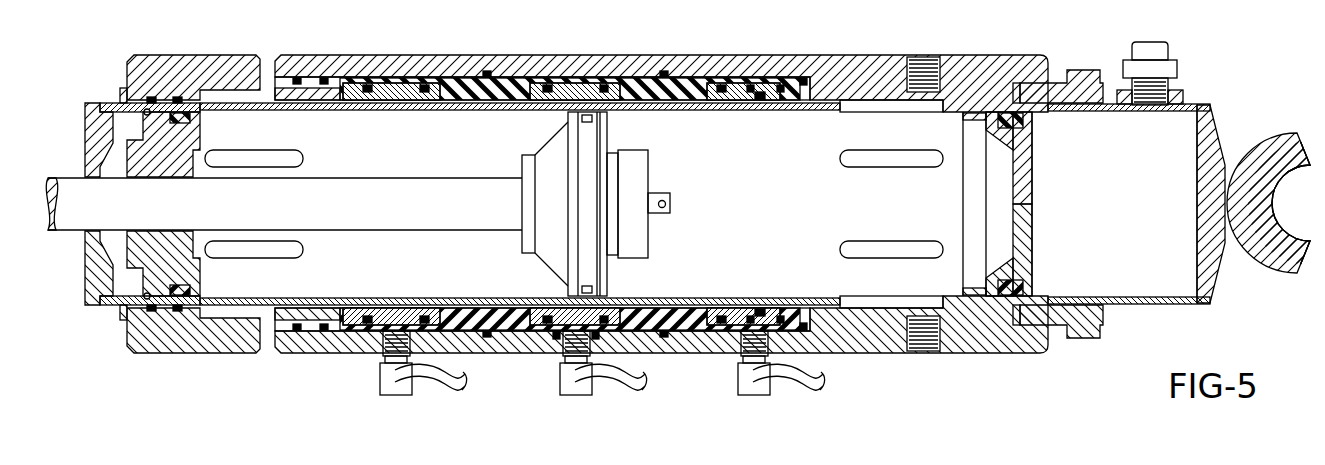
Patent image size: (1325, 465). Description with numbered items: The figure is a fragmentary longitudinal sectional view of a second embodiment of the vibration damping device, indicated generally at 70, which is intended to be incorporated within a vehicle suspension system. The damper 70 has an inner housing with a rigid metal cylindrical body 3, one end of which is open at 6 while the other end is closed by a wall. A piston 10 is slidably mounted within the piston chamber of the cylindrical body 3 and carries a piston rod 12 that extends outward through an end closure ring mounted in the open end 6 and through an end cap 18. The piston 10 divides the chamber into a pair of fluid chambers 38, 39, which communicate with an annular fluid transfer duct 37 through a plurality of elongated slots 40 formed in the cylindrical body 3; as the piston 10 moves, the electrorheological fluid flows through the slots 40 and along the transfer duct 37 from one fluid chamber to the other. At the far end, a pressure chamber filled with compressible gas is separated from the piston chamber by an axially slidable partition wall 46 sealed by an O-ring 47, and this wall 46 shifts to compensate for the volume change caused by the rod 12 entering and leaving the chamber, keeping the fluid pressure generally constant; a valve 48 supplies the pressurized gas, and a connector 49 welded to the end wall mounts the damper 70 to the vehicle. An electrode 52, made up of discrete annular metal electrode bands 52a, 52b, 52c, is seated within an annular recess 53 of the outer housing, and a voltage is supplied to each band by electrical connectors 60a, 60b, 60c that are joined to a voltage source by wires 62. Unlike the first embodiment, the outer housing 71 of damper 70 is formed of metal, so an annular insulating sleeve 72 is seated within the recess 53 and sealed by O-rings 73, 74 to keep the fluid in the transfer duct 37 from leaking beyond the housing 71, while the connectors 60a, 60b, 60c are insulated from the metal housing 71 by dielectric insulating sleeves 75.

The vibration damping device 70 is at (140, 34).
The end cap 18 is at (92, 155).
The piston rod 12 is at (385, 215).
The piston 10 is at (585, 222).
The fluid chamber 38 is at (450, 160).
The fluid chamber 39 is at (826, 210).
The elongated slots 40 is at (271, 108).
The cylindrical body 3 is at (803, 300).
The annular fluid transfer duct 37 is at (915, 316).
The partition wall 46 is at (1030, 160).
The O-ring 47 is at (1006, 300).
The valve 48 is at (1180, 68).
The connector 49 is at (1283, 140).
The electrode 52 is at (561, 168).
The electrode band 52a is at (405, 312).
The electrode band 52b is at (567, 312).
The electrode band 52c is at (762, 310).
The annular recess 53 is at (760, 95).
The O-rings 73 is at (370, 85).
The O-rings 74 is at (481, 78).
The dielectric insulating sleeves 75 is at (559, 336).
The annular insulating sleeve 72 is at (686, 327).
The outer housing 71 is at (884, 360).
The electrical connector 60a is at (398, 398).
The electrical connector 60b is at (580, 398).
The electrical connector 60c is at (768, 398).
The wires 62 is at (430, 390).
The open end 6 is at (735, 25).